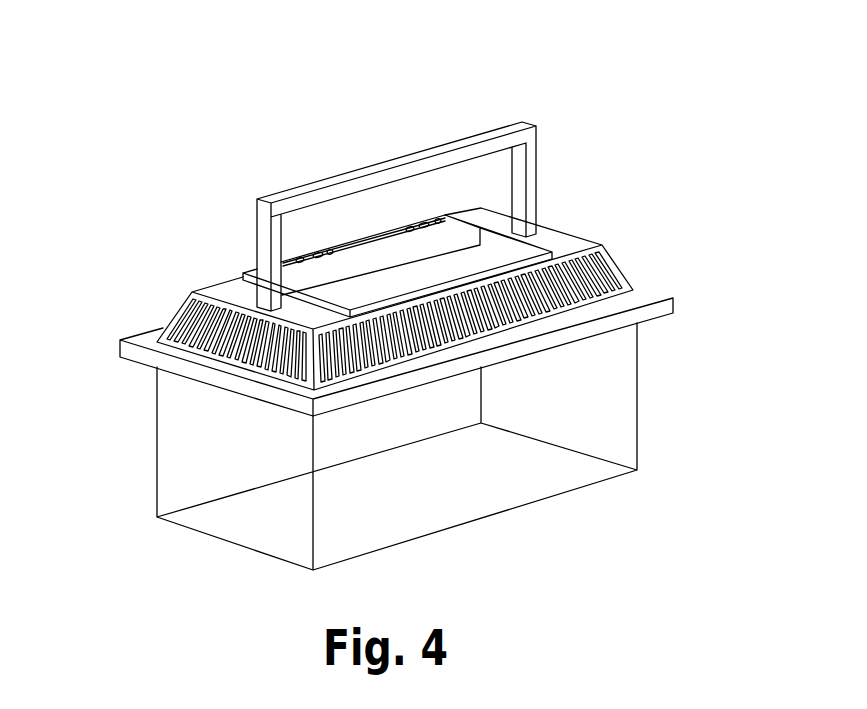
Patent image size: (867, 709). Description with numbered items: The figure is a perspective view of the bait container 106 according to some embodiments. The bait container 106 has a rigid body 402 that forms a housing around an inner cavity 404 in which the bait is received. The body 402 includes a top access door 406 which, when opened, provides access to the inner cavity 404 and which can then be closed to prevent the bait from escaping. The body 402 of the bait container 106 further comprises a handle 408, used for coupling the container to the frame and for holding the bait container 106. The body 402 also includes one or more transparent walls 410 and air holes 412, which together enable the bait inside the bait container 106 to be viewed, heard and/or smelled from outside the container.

The bait container 106 is at (677, 59).
The rigid body 402 is at (600, 260).
The inner cavity 404 is at (207, 477).
The top access door 406 is at (383, 260).
The handle 408 is at (388, 161).
The transparent walls 410 is at (638, 394).
The air holes 412 is at (192, 322).